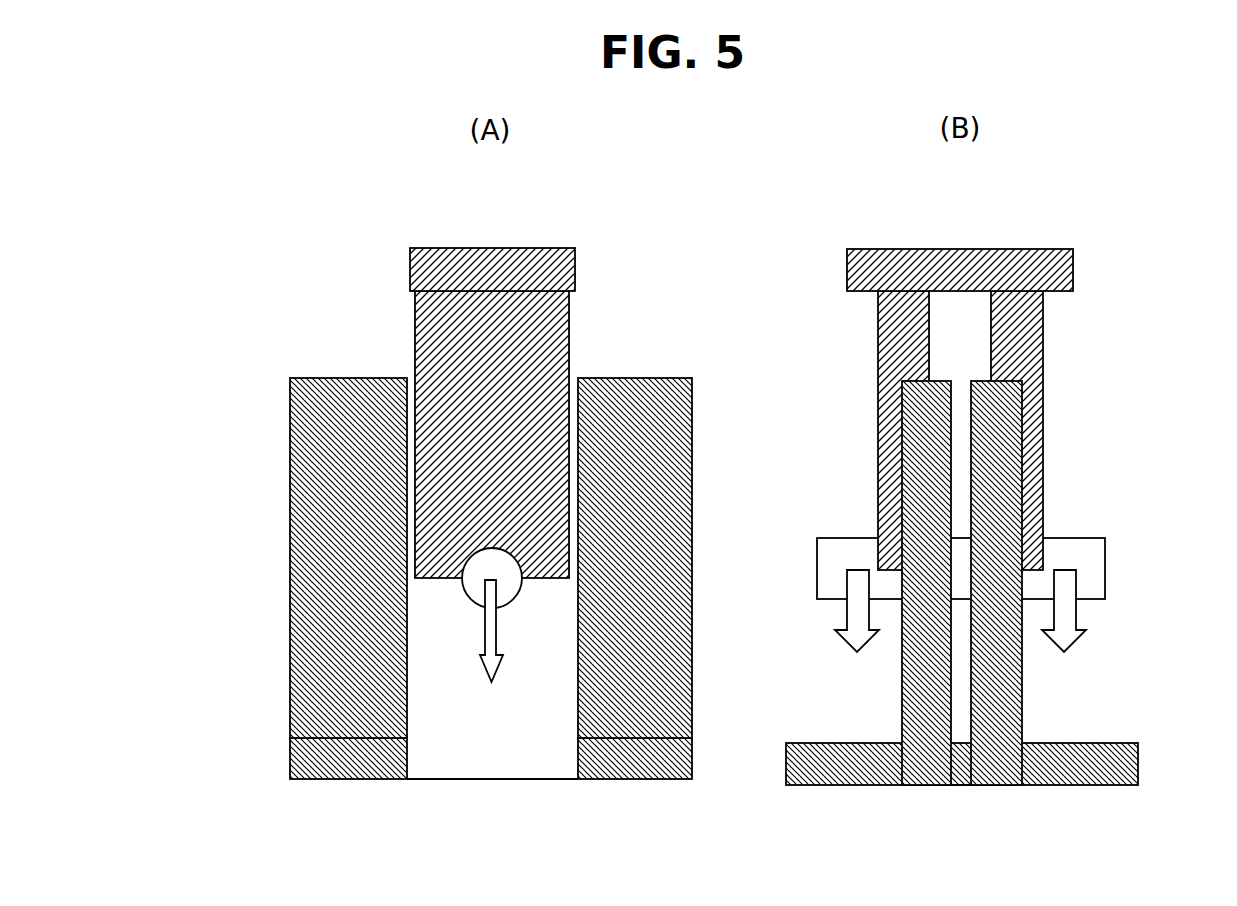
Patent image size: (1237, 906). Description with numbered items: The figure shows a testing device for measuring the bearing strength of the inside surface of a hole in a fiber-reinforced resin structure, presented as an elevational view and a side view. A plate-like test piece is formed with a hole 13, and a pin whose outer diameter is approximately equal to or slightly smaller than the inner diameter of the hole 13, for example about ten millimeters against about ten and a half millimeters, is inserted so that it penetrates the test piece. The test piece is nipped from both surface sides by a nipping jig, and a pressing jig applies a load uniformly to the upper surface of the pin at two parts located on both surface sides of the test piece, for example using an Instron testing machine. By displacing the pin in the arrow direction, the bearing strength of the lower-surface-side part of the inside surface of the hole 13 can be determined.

The hole 13 is at (481, 584).